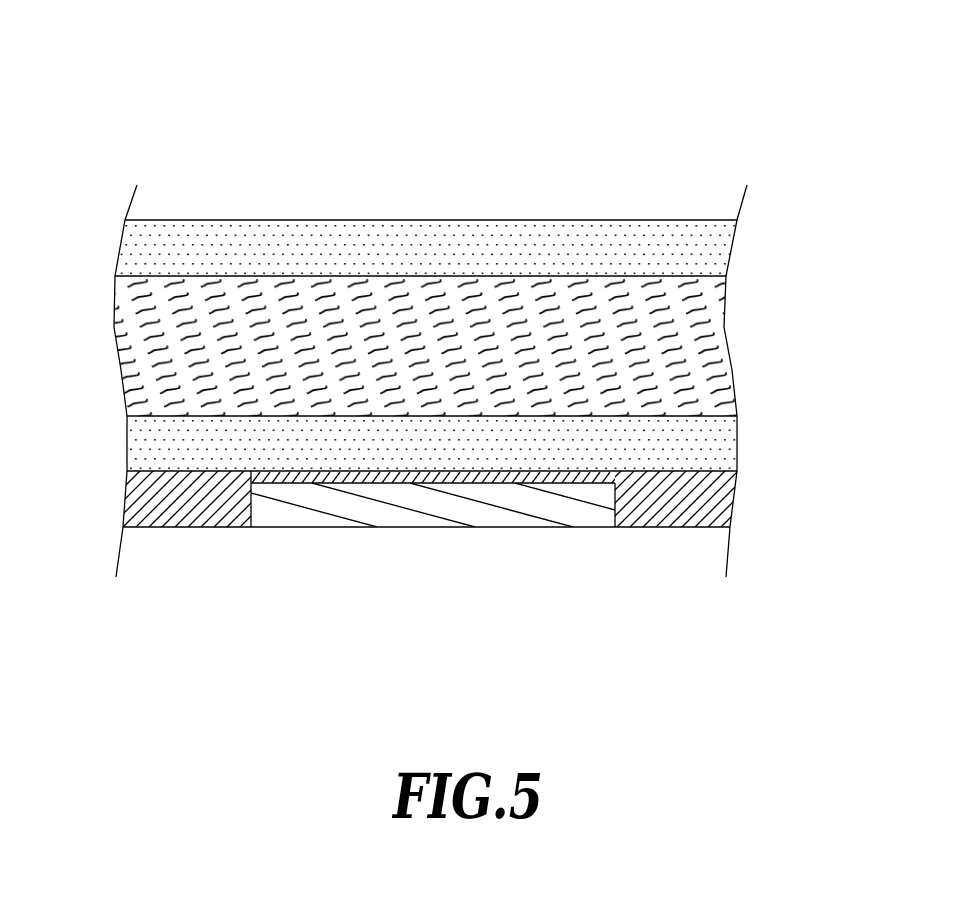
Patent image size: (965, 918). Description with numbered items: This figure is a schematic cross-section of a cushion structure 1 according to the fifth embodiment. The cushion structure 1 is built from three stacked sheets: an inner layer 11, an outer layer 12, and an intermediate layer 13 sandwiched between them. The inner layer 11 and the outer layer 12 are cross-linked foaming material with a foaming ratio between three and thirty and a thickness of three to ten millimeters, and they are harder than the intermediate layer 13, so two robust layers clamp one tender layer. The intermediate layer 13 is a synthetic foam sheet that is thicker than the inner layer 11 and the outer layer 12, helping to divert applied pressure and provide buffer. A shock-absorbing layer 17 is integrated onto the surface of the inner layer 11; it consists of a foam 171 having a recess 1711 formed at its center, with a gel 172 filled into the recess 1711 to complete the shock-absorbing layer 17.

The cushion structure 1 is at (832, 125).
The inner layer 11 is at (730, 441).
The outer layer 12 is at (730, 242).
The intermediate layer 13 is at (724, 313).
The shock-absorbing layer 17 is at (430, 590).
The foam 171 is at (205, 527).
The recess 1711 is at (251, 507).
The gel 172 is at (198, 635).